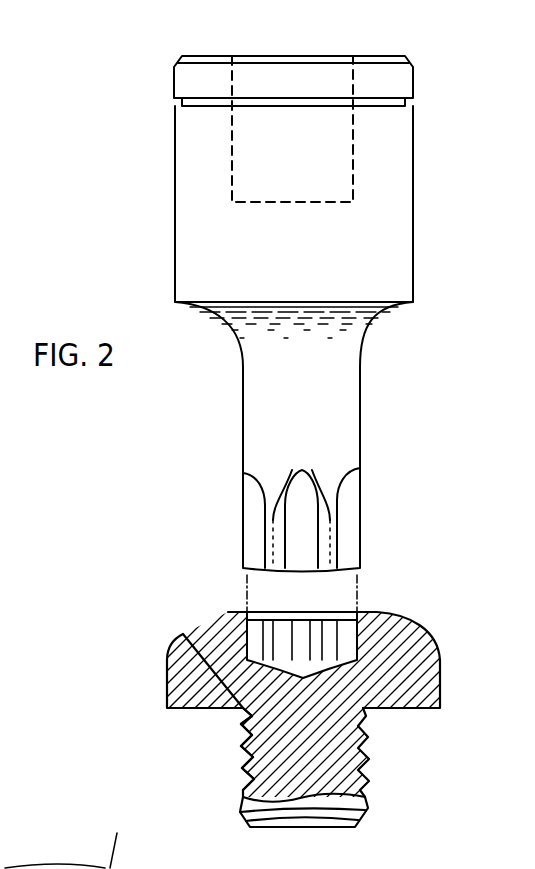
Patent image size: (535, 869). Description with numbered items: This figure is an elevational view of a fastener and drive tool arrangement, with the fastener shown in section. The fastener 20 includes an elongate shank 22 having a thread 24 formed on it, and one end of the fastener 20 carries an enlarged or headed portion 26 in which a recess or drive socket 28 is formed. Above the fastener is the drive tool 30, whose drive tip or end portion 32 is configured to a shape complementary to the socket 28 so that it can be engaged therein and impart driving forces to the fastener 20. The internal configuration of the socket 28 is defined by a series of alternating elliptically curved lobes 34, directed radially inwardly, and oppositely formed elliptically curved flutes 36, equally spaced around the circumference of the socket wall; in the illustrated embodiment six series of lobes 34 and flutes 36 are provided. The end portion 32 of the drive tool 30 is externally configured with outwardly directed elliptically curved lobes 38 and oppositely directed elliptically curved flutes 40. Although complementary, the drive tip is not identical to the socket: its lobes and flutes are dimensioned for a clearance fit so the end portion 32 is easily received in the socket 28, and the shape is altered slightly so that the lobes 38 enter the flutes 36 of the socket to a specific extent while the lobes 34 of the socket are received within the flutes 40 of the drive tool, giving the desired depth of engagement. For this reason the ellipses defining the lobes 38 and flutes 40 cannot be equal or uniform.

The fastener 20 is at (156, 678).
The elongate shank 22 is at (393, 776).
The thread 24 is at (240, 763).
The headed portion 26 is at (405, 633).
The drive socket 28 is at (345, 598).
The drive tool 30 is at (322, 374).
The end portion 32 is at (233, 518).
The lobes 34 is at (293, 625).
The flutes 36 is at (253, 612).
The lobes 38 is at (312, 470).
The flutes 40 is at (247, 535).